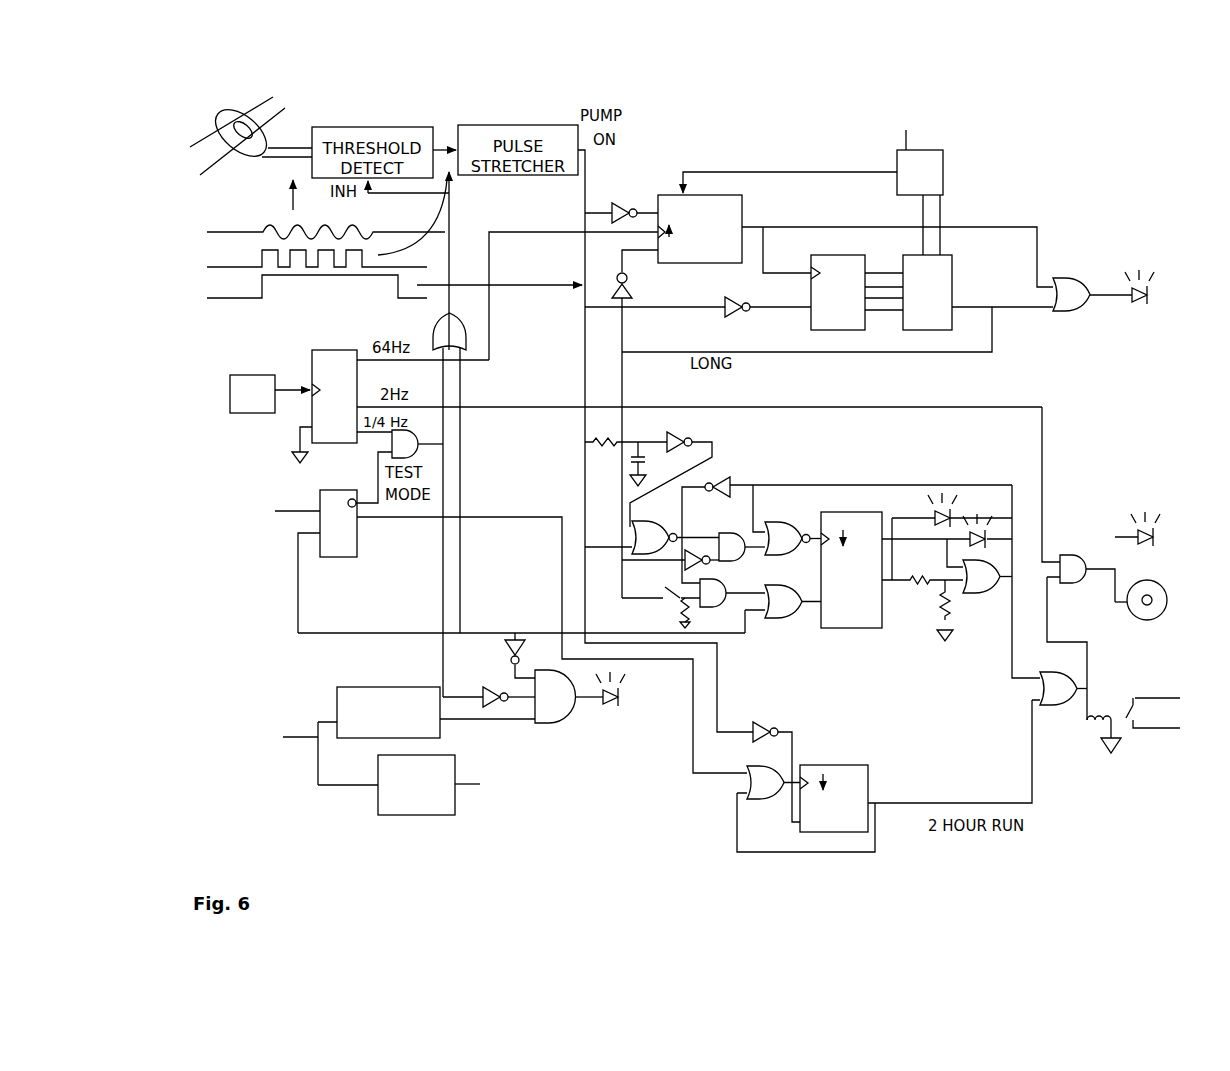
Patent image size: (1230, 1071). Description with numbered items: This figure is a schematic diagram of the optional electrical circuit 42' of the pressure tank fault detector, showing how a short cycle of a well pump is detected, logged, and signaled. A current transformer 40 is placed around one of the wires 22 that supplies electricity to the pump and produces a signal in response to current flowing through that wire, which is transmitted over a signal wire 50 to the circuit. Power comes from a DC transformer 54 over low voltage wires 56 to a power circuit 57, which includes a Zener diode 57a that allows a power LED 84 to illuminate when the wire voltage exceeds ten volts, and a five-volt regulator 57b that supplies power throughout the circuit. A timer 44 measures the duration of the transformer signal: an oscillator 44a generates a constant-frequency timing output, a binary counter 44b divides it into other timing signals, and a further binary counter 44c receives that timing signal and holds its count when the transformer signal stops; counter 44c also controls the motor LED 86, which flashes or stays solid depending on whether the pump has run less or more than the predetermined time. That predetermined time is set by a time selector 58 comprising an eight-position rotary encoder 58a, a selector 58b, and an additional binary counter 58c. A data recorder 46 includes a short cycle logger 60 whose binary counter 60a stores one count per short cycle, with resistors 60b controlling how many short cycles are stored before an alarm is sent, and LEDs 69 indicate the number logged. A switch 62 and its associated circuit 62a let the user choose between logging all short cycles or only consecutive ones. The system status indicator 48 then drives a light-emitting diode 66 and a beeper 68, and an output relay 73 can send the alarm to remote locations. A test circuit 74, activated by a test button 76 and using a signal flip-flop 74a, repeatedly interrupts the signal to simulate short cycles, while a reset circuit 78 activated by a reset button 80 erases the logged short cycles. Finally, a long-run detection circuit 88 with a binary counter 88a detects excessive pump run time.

The wire 22 is at (270, 102).
The current transformer 40 is at (217, 132).
The signal wire 50 is at (295, 147).
The timer 44 is at (798, 121).
The oscillator 44a is at (256, 363).
The binary counter 44b is at (333, 345).
The binary counter 44c is at (654, 193).
The optional electrical circuit 42' is at (1080, 102).
The time selector 58 is at (957, 215).
The rotary encoder 58a is at (932, 150).
The selector 58b is at (952, 283).
The additional binary counter 58c is at (845, 253).
The system status indicator 48 is at (1180, 235).
The motor LED 86 is at (1106, 341).
The associated circuit 62a is at (754, 451).
The short cycle logger 60 is at (914, 564).
The binary counter 60a is at (836, 629).
The resistors 60b is at (925, 622).
The LEDs 69 is at (960, 478).
The light-emitting diode 66 is at (1125, 486).
The beeper 68 is at (1160, 575).
The switch 62 is at (661, 602).
The data recorder 46 is at (761, 638).
The test button 76 is at (237, 491).
The test circuit 74 is at (316, 485).
The signal flip-flop 74a is at (363, 563).
The reset circuit 78 is at (275, 586).
The reset button 80 is at (243, 612).
The low voltage wires 56 is at (300, 733).
The DC transformer 54 is at (233, 762).
The power circuit 57 is at (312, 788).
The Zener diode 57a is at (384, 683).
The 5V regulator 57b is at (416, 820).
The power LED 84 is at (636, 764).
The long-run detection circuit 88 is at (733, 862).
The binary counter 88a is at (841, 761).
The output relay 73 is at (1107, 810).